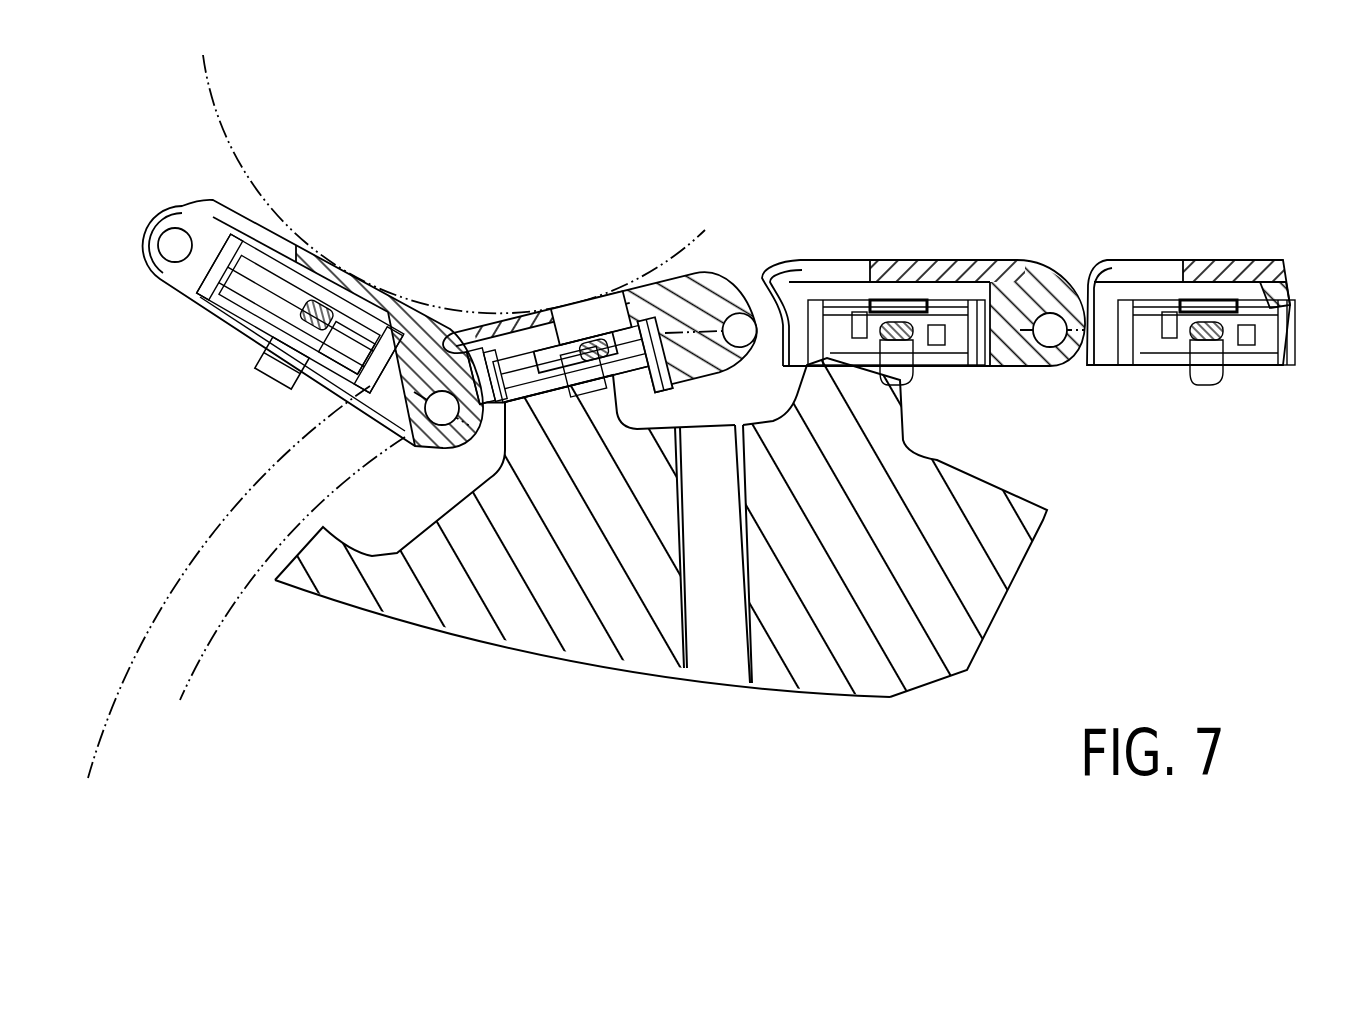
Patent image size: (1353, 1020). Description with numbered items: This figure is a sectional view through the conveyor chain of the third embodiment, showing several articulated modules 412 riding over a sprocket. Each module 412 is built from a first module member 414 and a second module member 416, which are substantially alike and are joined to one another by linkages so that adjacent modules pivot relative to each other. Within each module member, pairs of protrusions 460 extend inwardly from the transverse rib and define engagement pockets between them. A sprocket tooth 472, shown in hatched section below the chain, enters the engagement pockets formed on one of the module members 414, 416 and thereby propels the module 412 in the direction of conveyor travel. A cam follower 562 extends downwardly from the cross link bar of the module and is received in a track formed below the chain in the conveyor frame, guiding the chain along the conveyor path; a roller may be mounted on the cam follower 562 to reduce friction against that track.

The module 412 is at (356, 262).
The first module member 414 is at (760, 272).
The second module member 416 is at (1027, 270).
The protrusions 460 is at (820, 305).
The sprocket tooth 472 is at (523, 437).
The cam follower 562 is at (288, 368).